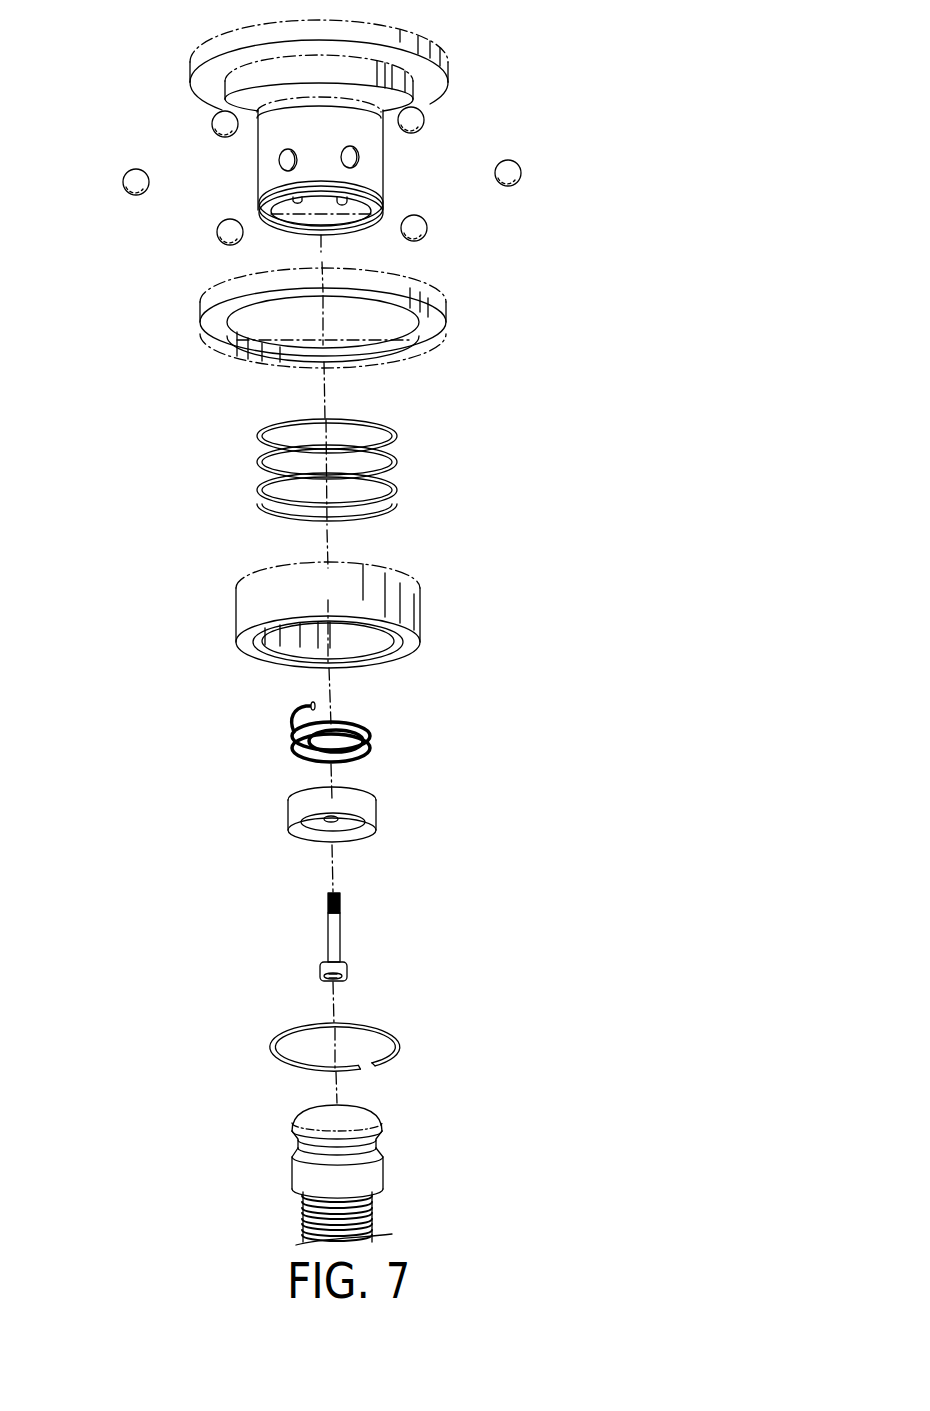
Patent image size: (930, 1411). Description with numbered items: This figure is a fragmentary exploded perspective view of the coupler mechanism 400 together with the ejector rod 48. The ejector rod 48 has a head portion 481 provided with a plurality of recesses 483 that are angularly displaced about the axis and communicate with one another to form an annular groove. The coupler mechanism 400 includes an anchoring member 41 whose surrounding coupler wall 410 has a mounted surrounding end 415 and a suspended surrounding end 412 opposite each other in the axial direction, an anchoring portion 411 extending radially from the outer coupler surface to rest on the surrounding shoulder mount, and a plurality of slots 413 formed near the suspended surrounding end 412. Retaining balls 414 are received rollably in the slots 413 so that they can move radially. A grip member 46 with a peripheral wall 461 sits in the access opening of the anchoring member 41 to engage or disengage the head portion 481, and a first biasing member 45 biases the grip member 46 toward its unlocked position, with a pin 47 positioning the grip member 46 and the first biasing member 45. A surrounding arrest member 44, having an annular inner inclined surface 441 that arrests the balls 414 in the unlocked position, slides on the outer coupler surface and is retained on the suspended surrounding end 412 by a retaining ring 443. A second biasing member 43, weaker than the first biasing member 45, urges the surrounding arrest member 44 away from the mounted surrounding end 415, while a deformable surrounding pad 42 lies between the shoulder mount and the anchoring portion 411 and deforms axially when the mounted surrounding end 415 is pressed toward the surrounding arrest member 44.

The coupler mechanism 400 is at (188, 441).
The anchoring member 41 is at (548, 134).
The surrounding coupler wall 410 is at (358, 133).
The anchoring portion 411 is at (420, 36).
The suspended surrounding end 412 is at (372, 180).
The slots 413 is at (360, 160).
The retaining balls 414 is at (521, 173).
The mounted surrounding end 415 is at (425, 72).
The surrounding pad 42 is at (447, 304).
The second biasing member 43 is at (393, 457).
The surrounding arrest member 44 is at (416, 608).
The annular inner inclined surface 441 is at (388, 652).
The retaining ring 443 is at (350, 1023).
The first biasing member 45 is at (370, 749).
The grip member 46 is at (377, 804).
The peripheral wall 461 is at (300, 807).
The pin 47 is at (338, 937).
The ejector rod 48 is at (392, 1178).
The head portion 481 is at (290, 1145).
The recesses 483 is at (380, 1138).